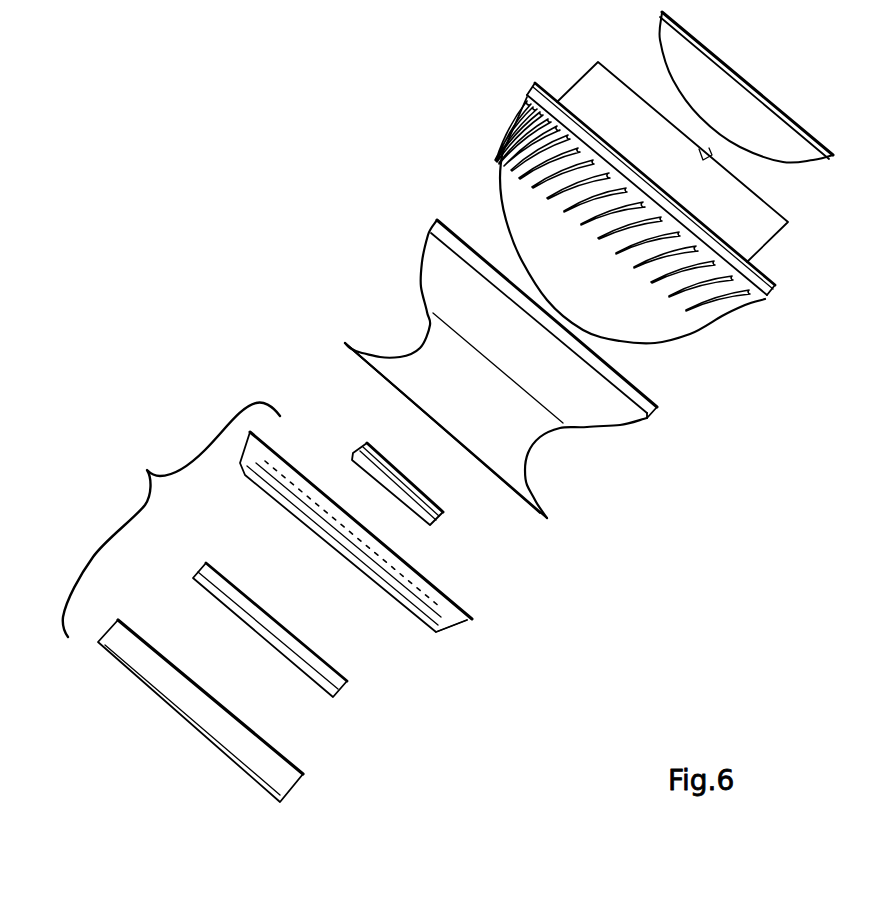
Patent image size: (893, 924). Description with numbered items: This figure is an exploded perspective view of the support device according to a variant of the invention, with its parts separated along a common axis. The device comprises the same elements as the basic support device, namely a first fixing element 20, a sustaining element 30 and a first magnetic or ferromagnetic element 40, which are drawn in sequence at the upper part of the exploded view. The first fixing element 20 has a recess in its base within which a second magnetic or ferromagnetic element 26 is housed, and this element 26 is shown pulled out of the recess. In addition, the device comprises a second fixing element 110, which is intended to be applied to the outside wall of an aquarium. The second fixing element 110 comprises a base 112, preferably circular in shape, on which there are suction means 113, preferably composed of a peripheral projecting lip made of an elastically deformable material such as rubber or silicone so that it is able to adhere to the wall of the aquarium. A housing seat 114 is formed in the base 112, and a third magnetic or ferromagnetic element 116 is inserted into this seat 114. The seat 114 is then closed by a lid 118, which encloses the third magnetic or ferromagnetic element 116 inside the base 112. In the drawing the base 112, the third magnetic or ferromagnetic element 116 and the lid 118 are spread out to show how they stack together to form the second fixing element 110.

The first fixing element 20 is at (418, 260).
The second magnetic or ferromagnetic element 26 is at (443, 513).
The sustaining element 30 is at (496, 176).
The first magnetic or ferromagnetic element 40 is at (660, 49).
The second fixing element 110 is at (171, 520).
The base 112 is at (459, 549).
The suction means 113 is at (474, 617).
The housing seat 114 is at (442, 633).
The third magnetic or ferromagnetic element 116 is at (347, 681).
The lid 118 is at (303, 774).